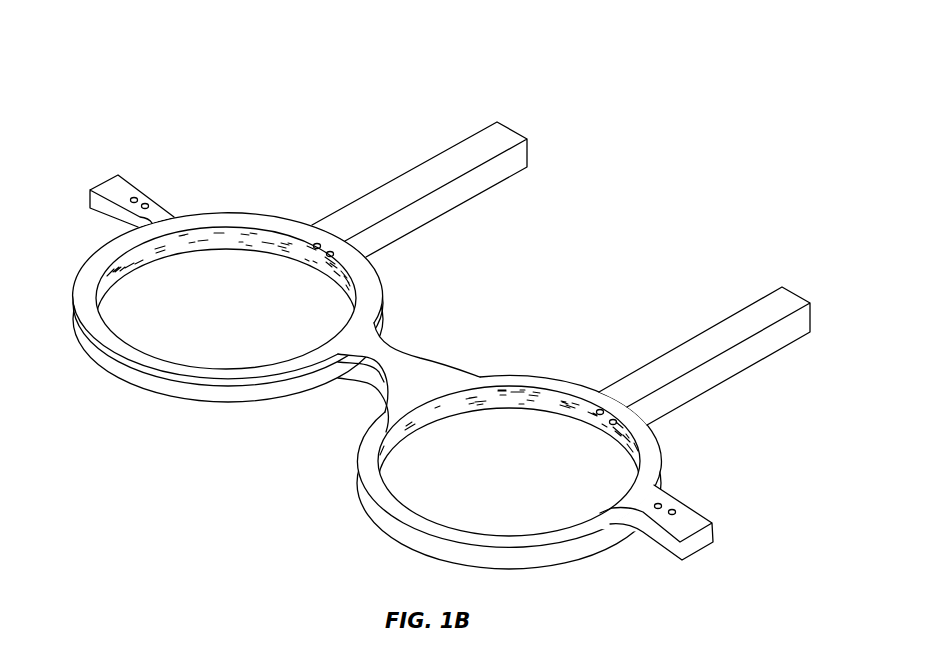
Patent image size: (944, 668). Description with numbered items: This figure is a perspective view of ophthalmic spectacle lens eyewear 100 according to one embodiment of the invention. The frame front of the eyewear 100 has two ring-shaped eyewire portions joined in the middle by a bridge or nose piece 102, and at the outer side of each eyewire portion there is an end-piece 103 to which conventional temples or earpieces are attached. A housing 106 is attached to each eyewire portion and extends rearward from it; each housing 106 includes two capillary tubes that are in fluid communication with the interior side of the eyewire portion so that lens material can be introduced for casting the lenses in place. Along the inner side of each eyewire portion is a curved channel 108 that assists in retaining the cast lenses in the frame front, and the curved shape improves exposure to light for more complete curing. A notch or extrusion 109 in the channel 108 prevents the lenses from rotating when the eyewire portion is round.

The ophthalmic eyewear 100 is at (128, 78).
The bridge or nose piece 102 is at (395, 343).
The end-pieces 103 is at (122, 187).
The housing 106 is at (448, 212).
The channel 108 is at (210, 232).
The notch or extrusion 109 is at (113, 370).